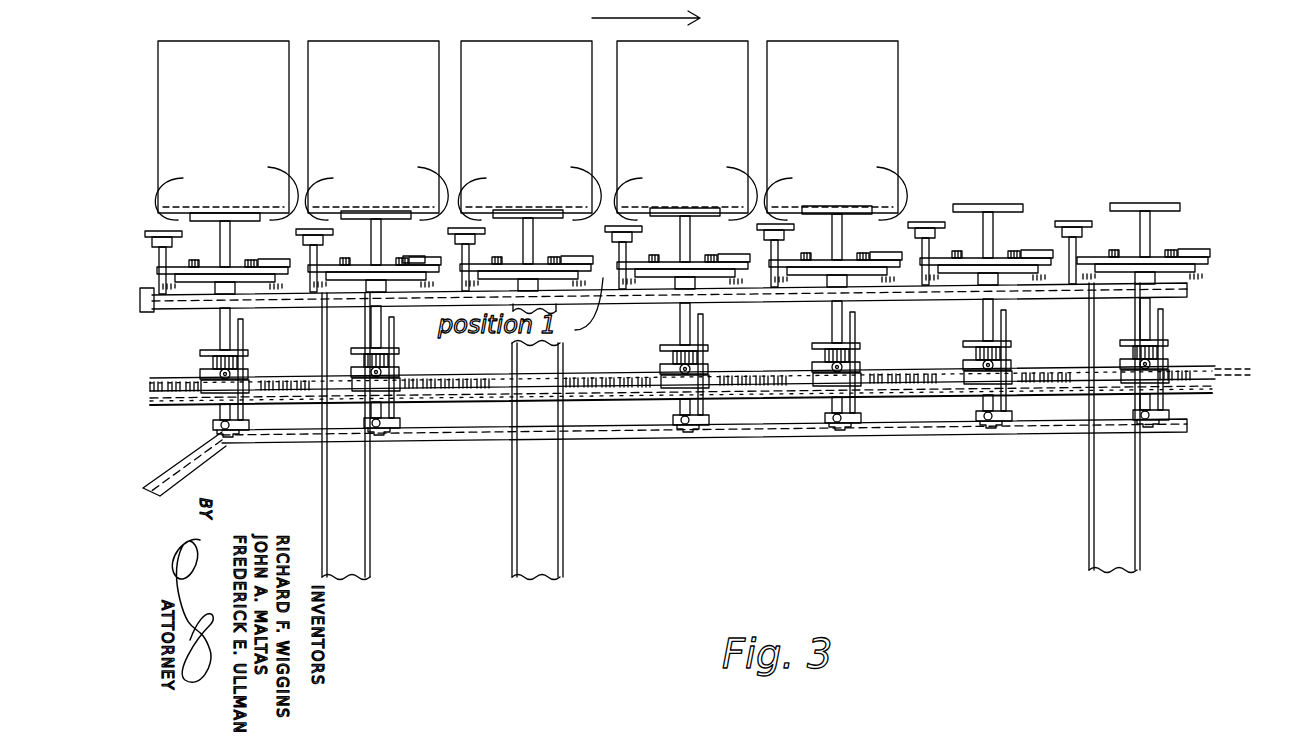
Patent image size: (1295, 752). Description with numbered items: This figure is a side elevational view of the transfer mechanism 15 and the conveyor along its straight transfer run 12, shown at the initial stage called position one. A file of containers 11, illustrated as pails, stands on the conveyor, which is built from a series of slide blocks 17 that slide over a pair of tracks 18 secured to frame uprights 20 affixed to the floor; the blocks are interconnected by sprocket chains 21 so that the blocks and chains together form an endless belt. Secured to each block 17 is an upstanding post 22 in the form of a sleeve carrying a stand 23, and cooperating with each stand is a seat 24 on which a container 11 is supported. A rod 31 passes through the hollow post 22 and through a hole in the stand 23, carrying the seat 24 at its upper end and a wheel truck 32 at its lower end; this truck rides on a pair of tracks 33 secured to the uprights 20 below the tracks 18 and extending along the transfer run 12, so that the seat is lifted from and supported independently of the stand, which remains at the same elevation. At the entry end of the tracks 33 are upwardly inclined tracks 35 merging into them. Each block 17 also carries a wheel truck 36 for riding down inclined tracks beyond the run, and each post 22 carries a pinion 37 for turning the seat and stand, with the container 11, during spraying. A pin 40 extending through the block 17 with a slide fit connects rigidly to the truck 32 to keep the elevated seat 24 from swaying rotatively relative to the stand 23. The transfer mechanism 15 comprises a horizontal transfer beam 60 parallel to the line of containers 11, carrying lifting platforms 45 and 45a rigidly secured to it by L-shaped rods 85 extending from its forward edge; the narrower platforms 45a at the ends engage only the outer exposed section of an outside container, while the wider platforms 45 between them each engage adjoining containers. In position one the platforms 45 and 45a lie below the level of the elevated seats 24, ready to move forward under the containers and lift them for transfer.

The container 11 is at (246, 40).
The transfer run 12 is at (934, 451).
The transfer mechanism 15 is at (941, 210).
The slide block 17 is at (250, 385).
The track 18 is at (597, 395).
The frame upright 20 is at (355, 555).
The sprocket chain 21 is at (755, 405).
The post 22 is at (220, 328).
The stand 23 is at (283, 252).
The seat 24 is at (198, 212).
The rod 31 is at (231, 238).
The wheel truck 32 is at (215, 426).
The track 33 is at (478, 442).
The upwardly inclined track 35 is at (180, 472).
The wheel truck 36 is at (240, 372).
The pinion 37 is at (210, 356).
The pin 40 is at (398, 336).
The lifting platform 45 is at (332, 236).
The lifting platform 45a is at (180, 236).
The transfer beam 60 is at (1082, 262).
The L-shaped rod 85 is at (440, 254).